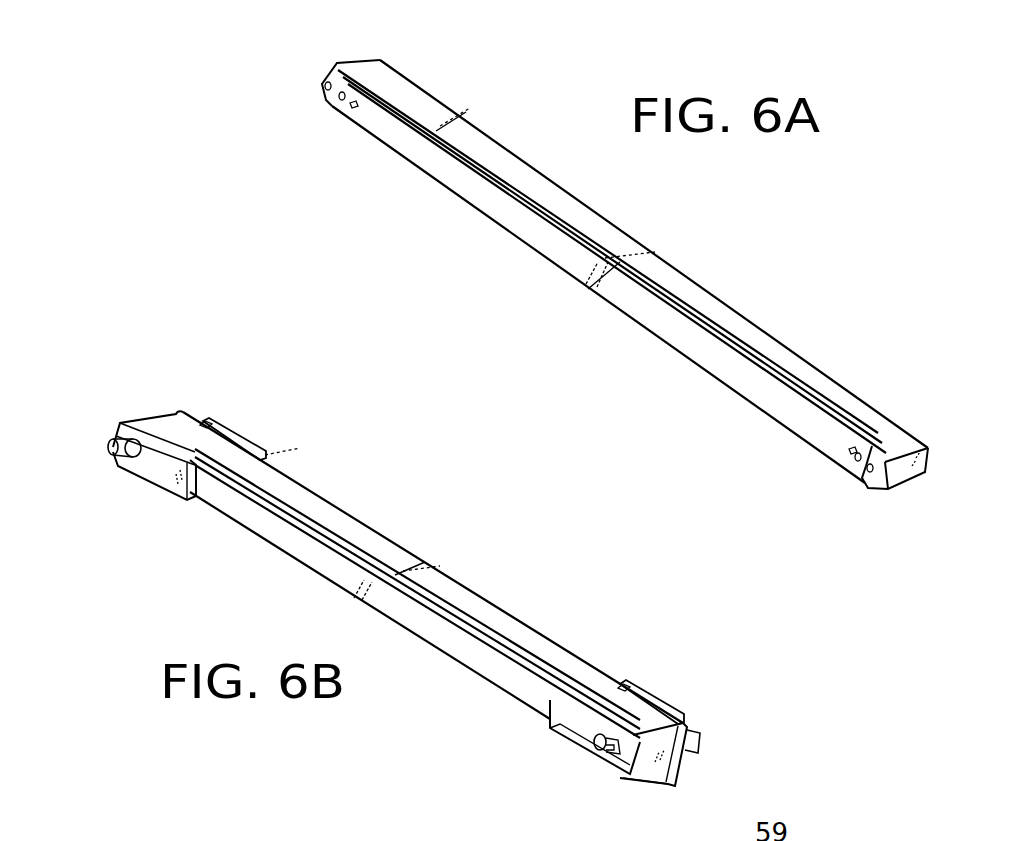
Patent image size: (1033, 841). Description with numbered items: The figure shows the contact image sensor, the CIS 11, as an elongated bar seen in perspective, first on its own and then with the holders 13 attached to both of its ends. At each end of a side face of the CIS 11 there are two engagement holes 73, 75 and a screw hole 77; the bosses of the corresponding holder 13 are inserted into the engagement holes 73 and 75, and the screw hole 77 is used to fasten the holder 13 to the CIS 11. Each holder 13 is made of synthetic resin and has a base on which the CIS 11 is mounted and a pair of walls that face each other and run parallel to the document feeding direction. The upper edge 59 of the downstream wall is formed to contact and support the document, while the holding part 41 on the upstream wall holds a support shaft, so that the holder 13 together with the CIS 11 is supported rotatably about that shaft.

In FIG. 6A, the CIS 11 is at (627, 246).
In FIG. 6B, the CIS 11 is at (407, 562).
In FIG. 6B, the holder 13 is at (164, 481).
In FIG. 6B, the holding part 41 is at (110, 436).
In FIG. 6B, the upper edge 59 is at (241, 434).
In FIG. 6A, the engagement hole 73 is at (326, 87).
In FIG. 6A, the engagement hole 75 is at (353, 107).
In FIG. 6A, the screw hole 77 is at (383, 62).